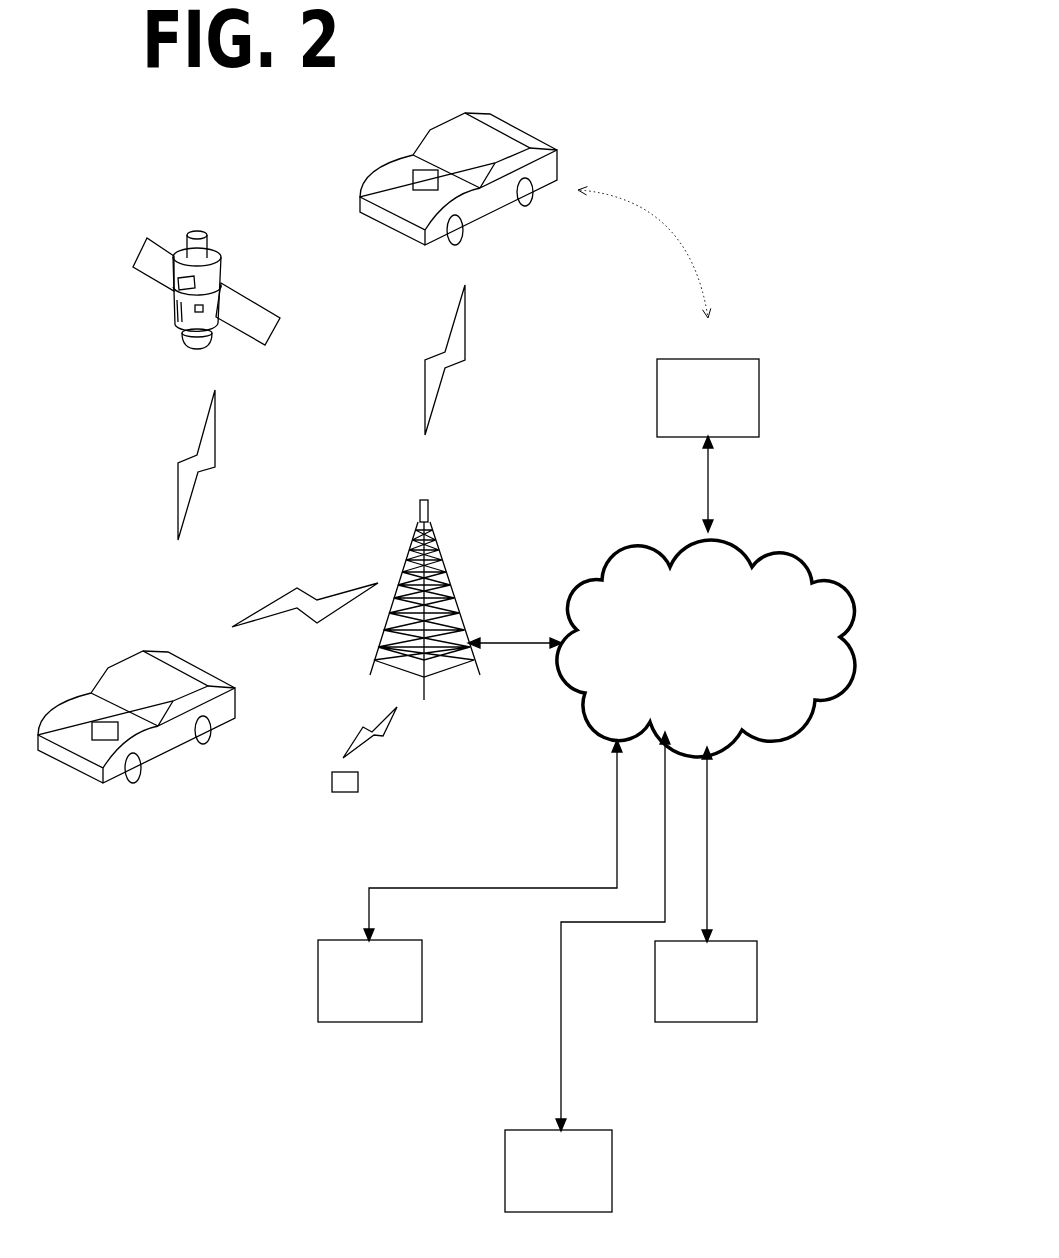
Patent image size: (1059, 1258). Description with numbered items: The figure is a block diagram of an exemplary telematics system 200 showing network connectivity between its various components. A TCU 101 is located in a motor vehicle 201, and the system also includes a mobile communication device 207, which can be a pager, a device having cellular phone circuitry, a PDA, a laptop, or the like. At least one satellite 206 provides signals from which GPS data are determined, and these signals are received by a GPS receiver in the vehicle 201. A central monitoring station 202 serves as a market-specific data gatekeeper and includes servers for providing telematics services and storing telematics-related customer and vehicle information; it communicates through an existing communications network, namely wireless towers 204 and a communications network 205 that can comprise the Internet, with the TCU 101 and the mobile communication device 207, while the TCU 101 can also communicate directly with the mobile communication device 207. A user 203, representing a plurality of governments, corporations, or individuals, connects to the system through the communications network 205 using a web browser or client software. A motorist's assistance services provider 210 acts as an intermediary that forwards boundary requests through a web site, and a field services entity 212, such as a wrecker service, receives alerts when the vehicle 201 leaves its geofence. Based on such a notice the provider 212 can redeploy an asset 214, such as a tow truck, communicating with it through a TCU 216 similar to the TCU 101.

The telematics system 200 is at (704, 20).
The TCU 101 is at (105, 740).
The motor vehicle 201 is at (172, 739).
The central monitoring station 202 is at (405, 940).
The user 203 is at (742, 941).
The wireless tower 204 is at (424, 500).
The communications network 205 is at (805, 563).
The satellite 206 is at (205, 237).
The mobile communication device 207 is at (345, 772).
The motorist's assistance services provider 210 is at (595, 1130).
The field services entity 212 is at (714, 350).
The asset 214 is at (494, 190).
The TCU 216 is at (428, 183).